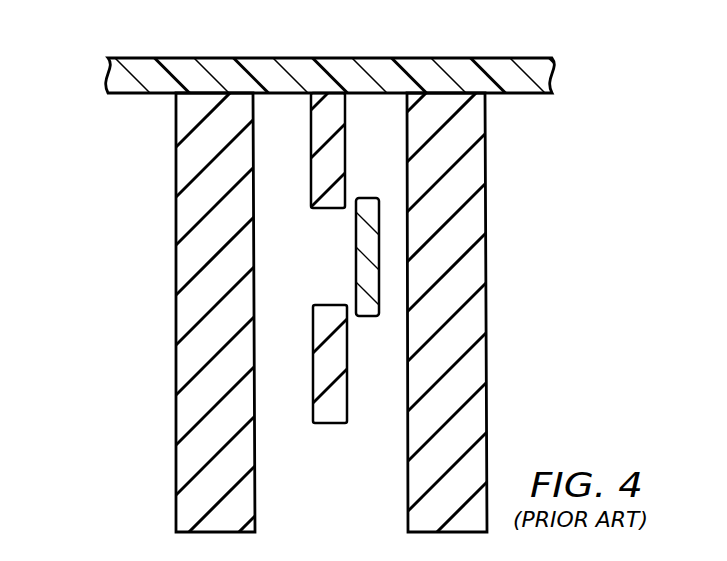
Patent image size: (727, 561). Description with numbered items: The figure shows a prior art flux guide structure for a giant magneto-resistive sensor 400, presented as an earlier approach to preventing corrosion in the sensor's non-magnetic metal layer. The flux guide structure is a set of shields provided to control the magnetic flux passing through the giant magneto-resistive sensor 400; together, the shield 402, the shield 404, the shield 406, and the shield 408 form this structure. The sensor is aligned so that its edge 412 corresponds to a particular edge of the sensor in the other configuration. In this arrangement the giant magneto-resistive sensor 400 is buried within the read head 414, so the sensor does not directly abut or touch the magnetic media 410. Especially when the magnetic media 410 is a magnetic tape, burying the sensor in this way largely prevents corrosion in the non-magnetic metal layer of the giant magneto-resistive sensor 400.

The giant magneto-resistive sensor 400 is at (356, 267).
The shield 402 is at (305, 132).
The shield 404 is at (330, 424).
The shield 406 is at (176, 318).
The shield 408 is at (487, 315).
The magnetic media 410 is at (107, 73).
The edge 412 is at (367, 197).
The read head 414 is at (541, 190).